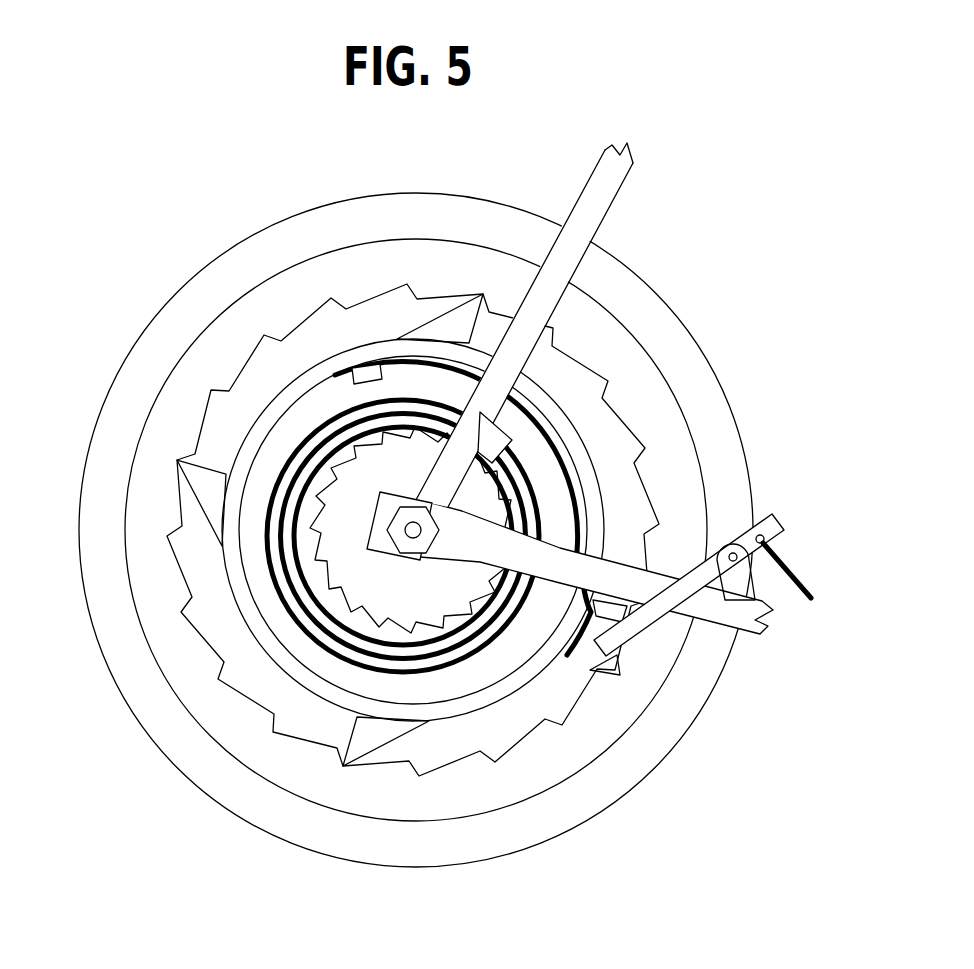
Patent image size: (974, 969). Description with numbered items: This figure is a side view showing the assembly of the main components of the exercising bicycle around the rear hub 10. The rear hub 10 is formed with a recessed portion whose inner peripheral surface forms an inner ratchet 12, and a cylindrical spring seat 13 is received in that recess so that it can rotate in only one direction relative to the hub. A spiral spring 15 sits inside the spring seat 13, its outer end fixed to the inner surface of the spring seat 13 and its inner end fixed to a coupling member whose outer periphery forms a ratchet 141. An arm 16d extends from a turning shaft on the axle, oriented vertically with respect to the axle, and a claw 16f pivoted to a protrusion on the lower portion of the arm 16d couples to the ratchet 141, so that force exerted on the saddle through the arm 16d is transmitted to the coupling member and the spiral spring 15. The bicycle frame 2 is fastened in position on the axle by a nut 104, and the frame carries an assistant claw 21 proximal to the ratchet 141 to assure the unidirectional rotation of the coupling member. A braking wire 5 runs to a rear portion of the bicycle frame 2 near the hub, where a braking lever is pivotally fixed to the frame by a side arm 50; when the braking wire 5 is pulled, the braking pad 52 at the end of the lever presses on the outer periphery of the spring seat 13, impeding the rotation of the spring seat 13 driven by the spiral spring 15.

The bicycle frame 2 is at (773, 610).
The braking wire 5 is at (793, 567).
The rear hub 10 is at (660, 727).
The inner ratchet 12 is at (617, 660).
The spring seat 13 is at (590, 485).
The spiral spring 15 is at (577, 522).
The arm 16d is at (600, 203).
The claw 16f is at (493, 438).
The assistant claw 21 is at (528, 585).
The side arm 50 is at (733, 647).
The braking pad 52 is at (560, 655).
The nut 104 is at (413, 538).
The ratchet 141 is at (465, 650).